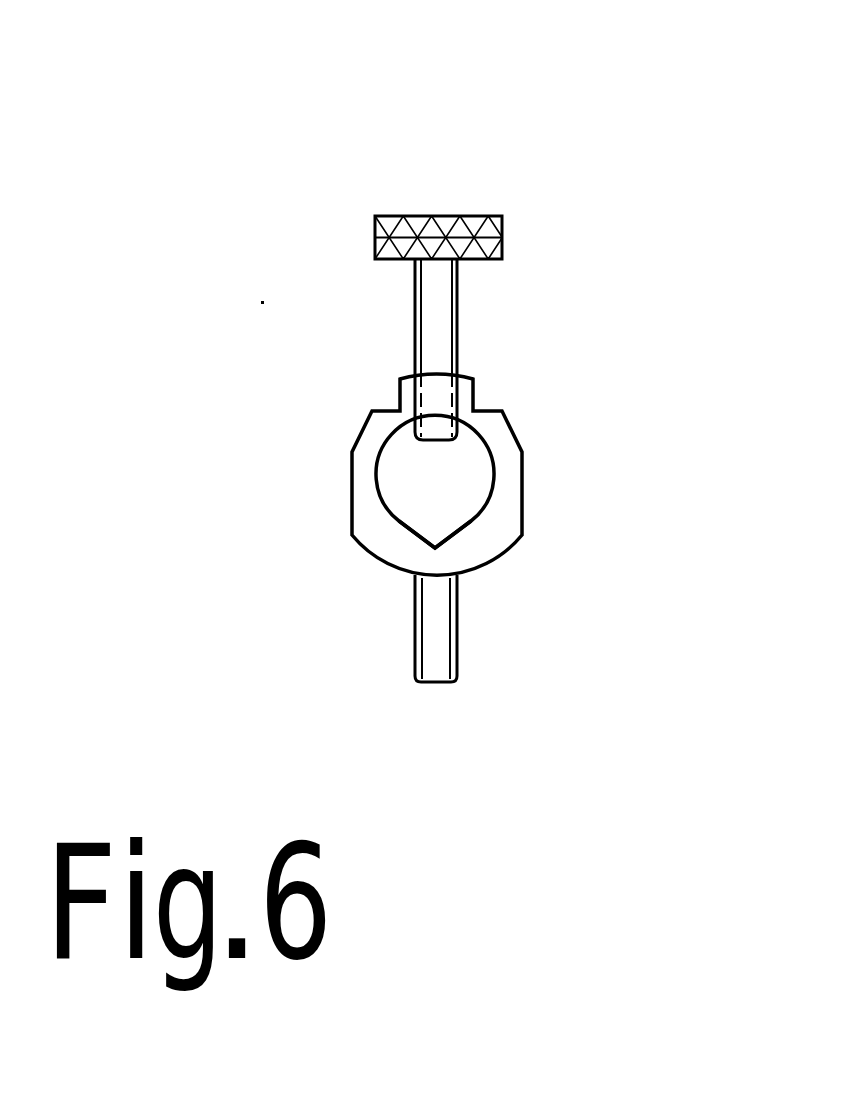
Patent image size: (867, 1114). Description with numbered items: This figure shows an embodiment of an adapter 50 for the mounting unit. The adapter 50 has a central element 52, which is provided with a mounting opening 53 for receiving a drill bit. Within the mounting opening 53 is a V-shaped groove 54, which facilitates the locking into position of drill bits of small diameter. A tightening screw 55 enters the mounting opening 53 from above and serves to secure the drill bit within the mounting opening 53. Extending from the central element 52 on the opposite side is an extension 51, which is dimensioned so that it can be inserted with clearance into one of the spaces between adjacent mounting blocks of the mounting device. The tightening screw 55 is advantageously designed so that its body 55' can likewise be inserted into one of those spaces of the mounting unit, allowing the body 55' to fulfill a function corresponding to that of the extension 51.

The adapter 50 is at (463, 370).
The extension 51 is at (437, 643).
The central element 52 is at (503, 512).
The mounting opening 53 is at (473, 507).
The V-shaped groove 54 is at (452, 537).
The tightening screw 55 is at (339, 136).
The body 55' is at (568, 349).